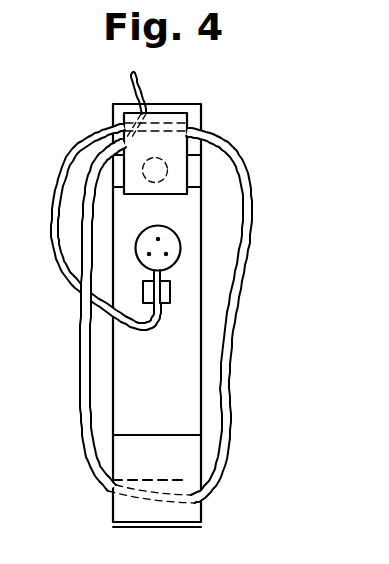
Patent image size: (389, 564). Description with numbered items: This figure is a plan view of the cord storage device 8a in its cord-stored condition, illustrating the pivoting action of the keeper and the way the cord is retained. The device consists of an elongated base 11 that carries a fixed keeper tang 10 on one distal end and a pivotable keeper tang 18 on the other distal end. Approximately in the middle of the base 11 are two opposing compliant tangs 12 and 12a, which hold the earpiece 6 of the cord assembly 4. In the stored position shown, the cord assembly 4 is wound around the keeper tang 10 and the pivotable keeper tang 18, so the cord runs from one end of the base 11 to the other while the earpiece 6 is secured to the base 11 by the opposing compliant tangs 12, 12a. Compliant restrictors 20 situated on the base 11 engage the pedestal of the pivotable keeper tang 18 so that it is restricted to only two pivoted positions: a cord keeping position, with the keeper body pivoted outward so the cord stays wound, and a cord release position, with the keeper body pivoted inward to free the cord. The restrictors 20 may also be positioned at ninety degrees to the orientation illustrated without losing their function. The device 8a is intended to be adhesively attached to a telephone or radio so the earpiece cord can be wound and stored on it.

The cord assembly 4 is at (244, 313).
The earpiece 6 is at (181, 246).
The cord storage device 8a is at (348, 106).
The keeper tang 10 is at (183, 463).
The elongated base 11 is at (185, 380).
The compliant tang 12 is at (143, 291).
The compliant tang 12a is at (171, 291).
The pivotable keeper tang 18 is at (176, 180).
The compliant restrictors 20 is at (117, 167).